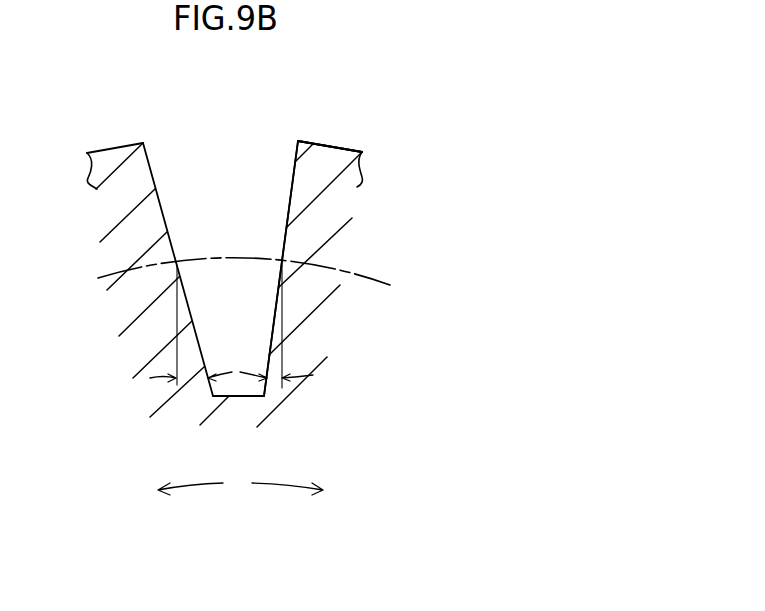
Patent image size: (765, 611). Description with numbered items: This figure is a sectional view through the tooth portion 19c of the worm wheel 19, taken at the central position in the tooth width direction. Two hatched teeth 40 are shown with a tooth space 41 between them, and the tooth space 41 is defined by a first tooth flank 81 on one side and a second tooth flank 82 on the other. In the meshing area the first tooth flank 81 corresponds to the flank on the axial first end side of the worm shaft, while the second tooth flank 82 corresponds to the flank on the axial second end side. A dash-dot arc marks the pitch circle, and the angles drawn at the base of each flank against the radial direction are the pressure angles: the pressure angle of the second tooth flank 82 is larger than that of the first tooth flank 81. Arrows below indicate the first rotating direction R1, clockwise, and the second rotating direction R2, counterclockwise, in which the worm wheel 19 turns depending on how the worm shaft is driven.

The worm wheel 19 is at (348, 101).
The tooth portion 19c is at (353, 150).
The gear tooth 40 is at (107, 163).
The tooth space 41 is at (220, 177).
The first tooth flank 81 is at (293, 173).
The second tooth flank 82 is at (152, 173).
The first rotating direction R1 is at (280, 487).
The second rotating direction R2 is at (197, 487).